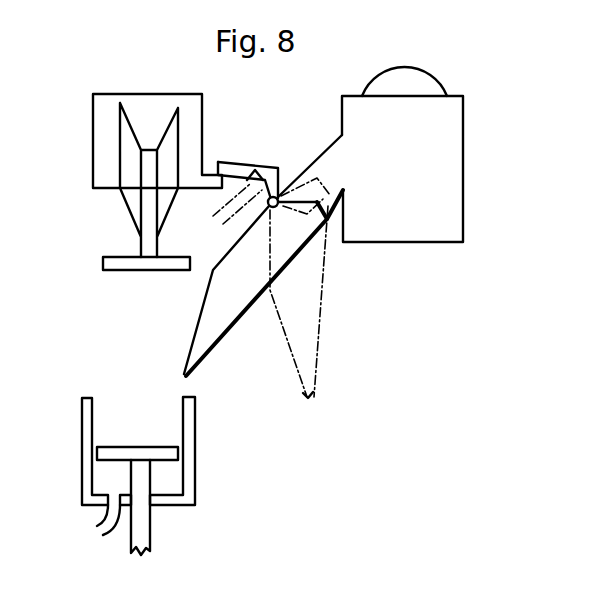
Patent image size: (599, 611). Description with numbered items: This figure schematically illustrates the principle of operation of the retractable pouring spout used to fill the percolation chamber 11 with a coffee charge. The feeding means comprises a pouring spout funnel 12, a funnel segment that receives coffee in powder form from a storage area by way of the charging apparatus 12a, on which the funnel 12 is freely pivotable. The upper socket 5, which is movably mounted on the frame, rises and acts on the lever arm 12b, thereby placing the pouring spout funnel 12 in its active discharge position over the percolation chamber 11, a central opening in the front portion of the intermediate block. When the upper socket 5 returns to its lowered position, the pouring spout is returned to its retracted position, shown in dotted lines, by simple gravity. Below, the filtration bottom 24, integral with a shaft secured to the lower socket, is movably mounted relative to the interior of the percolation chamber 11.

The upper socket 5 is at (105, 148).
The pouring spout funnel 12 is at (103, 260).
The charging apparatus 12a is at (437, 195).
The lever arm 12b is at (237, 167).
The percolation chamber 11 is at (110, 415).
The filtration bottom 24 is at (113, 455).